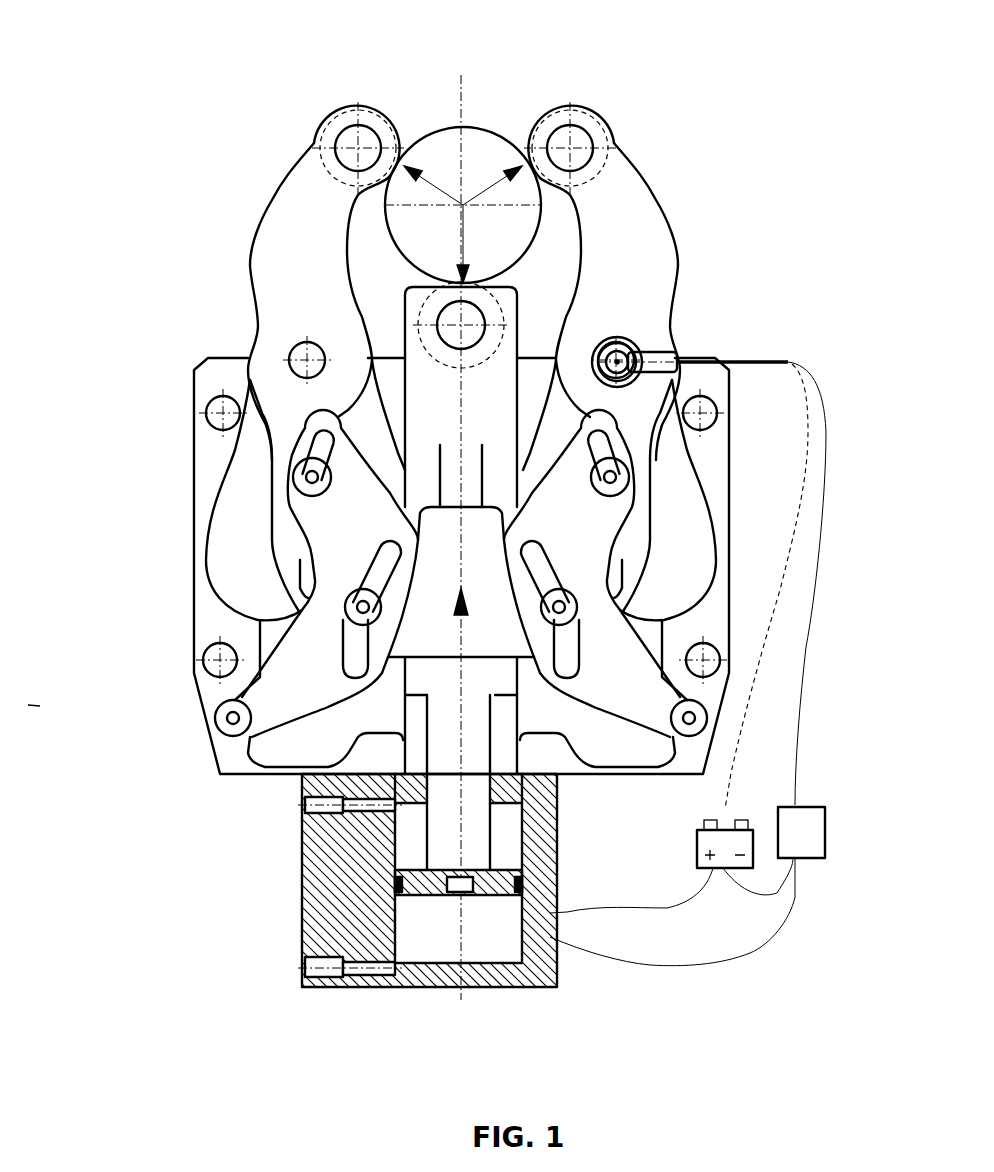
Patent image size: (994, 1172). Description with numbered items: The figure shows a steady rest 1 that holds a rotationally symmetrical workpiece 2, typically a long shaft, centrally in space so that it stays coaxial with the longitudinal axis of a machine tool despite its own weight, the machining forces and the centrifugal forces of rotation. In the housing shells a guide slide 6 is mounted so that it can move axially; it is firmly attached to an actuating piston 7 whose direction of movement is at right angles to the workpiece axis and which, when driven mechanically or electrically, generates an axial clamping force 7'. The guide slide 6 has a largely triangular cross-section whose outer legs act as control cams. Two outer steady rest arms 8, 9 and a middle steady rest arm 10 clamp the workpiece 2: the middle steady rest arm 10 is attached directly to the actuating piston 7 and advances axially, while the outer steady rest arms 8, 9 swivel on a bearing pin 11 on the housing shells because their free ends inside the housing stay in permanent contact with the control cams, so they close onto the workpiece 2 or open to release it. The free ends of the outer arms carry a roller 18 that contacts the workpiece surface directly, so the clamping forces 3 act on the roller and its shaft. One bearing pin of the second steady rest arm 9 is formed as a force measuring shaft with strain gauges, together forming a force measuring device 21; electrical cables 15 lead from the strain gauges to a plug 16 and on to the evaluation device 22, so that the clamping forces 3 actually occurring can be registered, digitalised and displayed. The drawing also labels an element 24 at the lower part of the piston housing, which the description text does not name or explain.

The steady rest 1 is at (442, 536).
The workpiece 2 is at (443, 150).
The clamping forces 3 is at (481, 190).
The guide slide 6 is at (498, 620).
The actuating piston 7 is at (380, 830).
The axial clamping force 7' is at (333, 654).
The first outer steady rest arm 8 is at (305, 222).
The second outer steady rest arm 9 is at (645, 235).
The middle steady rest arm 10 is at (427, 357).
The bearing pin 11 is at (298, 352).
The electrical cables 15 is at (745, 362).
The plug 16 is at (655, 360).
The roller 18 is at (403, 288).
The force measuring device 21 is at (640, 347).
The evaluation device 22 is at (812, 848).
The hydraulic cylinder 24 is at (470, 897).